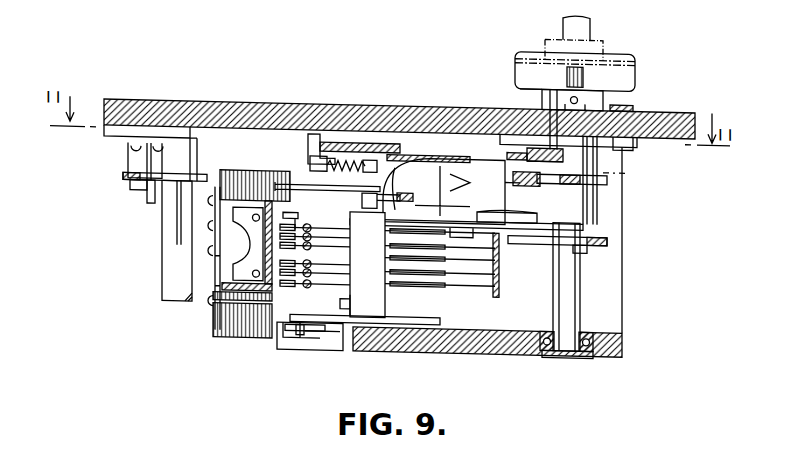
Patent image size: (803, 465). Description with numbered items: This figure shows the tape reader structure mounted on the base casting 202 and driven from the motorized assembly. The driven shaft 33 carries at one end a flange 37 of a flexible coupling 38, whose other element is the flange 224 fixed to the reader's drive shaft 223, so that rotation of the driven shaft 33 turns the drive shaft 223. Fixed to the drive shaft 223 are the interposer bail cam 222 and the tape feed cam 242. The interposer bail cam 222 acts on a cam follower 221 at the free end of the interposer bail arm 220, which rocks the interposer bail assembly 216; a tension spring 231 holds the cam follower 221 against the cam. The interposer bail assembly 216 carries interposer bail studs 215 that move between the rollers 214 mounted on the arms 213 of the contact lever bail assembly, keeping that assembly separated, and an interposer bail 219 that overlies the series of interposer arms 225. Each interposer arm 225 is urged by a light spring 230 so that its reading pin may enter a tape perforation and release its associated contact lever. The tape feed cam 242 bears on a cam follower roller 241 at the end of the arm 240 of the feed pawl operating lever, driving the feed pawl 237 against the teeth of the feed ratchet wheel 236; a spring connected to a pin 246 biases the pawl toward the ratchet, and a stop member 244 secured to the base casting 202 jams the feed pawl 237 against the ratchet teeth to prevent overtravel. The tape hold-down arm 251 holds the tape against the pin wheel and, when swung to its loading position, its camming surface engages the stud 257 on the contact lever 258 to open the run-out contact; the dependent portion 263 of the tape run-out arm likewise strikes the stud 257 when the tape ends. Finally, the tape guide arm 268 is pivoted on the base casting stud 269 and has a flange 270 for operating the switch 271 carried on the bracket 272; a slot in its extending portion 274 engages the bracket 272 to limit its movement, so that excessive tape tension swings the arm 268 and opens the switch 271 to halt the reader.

The base casting 202 is at (242, 106).
The driven shaft 33 is at (592, 24).
The flange 37 is at (620, 52).
The flexible coupling 38 is at (636, 71).
The stop member 244 is at (553, 146).
The flange 224 is at (516, 85).
The stud 257 is at (378, 162).
The feed ratchet wheel 236 is at (392, 147).
The feed pawl 237 is at (308, 140).
The pin 246 is at (312, 165).
The contact lever 258 is at (306, 189).
The dependent portion 263 is at (433, 157).
The base casting stud 269 is at (128, 165).
The arm 268 is at (124, 183).
The flange 270 is at (151, 205).
The extending portion 274 is at (178, 200).
The switch 271 is at (162, 248).
The bracket 272 is at (187, 304).
The roller 214 is at (266, 233).
The interposer bail stud 215 is at (295, 221).
The interposer bail assembly 216 is at (347, 216).
The interposer arm 225 is at (325, 272).
The interposer bail 219 is at (340, 305).
The arm 213 is at (338, 352).
The spring 230 is at (470, 276).
The arm 240 is at (500, 163).
The tape hold-down arm 251 is at (432, 201).
The tension spring 231 is at (482, 216).
The cam follower roller 241 is at (528, 183).
The tape feed cam 242 is at (590, 175).
The interposer bail arm 220 is at (580, 235).
The interposer bail cam 222 is at (606, 237).
The cam follower 221 is at (586, 249).
The drive shaft 223 is at (577, 284).